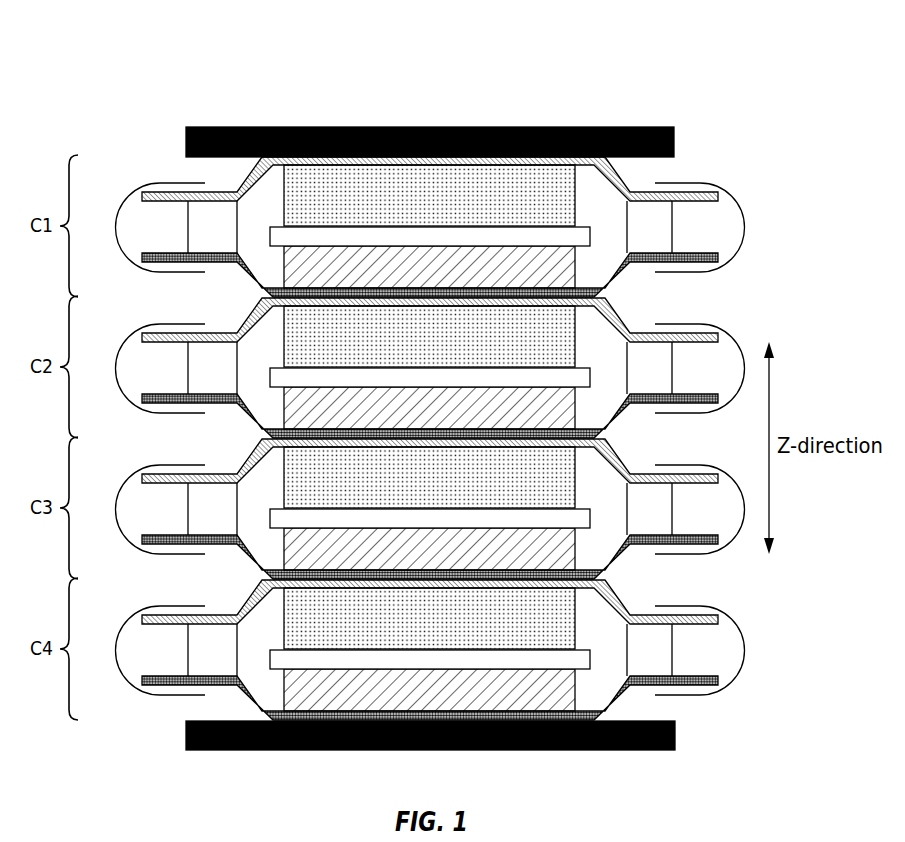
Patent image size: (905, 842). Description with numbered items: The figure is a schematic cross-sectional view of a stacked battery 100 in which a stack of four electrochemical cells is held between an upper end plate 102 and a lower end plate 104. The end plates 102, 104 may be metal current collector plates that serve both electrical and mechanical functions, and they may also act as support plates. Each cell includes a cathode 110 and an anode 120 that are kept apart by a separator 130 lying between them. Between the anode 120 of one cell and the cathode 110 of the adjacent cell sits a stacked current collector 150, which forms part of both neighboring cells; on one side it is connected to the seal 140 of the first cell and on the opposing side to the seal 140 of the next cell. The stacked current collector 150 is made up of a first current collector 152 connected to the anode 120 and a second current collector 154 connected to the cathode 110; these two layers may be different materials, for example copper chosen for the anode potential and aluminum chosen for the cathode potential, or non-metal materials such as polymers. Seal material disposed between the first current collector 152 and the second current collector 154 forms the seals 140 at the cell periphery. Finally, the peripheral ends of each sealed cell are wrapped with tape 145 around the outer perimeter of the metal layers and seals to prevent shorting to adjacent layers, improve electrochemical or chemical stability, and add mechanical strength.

The stacked battery 100 is at (278, 66).
The end plate 102 is at (550, 128).
The end plate 104 is at (300, 750).
The cathode 110 is at (284, 188).
The anode 120 is at (284, 253).
The separator 130 is at (270, 658).
The seal 140 is at (673, 235).
The tape 145 is at (717, 182).
The stacked current collector 150 is at (749, 245).
The first current collector 152 is at (725, 227).
The second current collector 154 is at (720, 338).